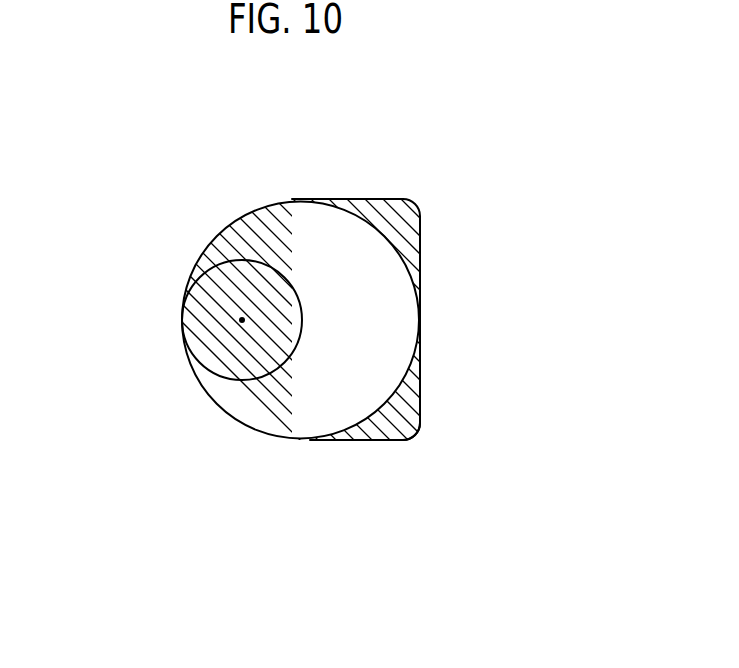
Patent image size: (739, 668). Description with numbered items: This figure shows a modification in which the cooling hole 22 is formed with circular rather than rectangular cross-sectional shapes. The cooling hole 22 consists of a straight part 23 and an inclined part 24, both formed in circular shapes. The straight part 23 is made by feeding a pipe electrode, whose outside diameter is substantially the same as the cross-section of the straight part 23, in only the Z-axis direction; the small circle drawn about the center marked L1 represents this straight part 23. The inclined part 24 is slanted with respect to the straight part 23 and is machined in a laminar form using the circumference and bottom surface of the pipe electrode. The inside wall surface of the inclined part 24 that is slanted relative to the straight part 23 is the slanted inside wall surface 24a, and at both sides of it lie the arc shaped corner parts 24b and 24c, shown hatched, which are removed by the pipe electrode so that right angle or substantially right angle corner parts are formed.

The cooling hole 22 is at (202, 133).
The straight part 23 is at (220, 280).
The inclined part 24 is at (300, 233).
The slanted inside wall surface 24a is at (419, 320).
The arc shaped corner part 24b is at (382, 230).
The arc shaped corner part 24c is at (397, 437).
The central axis L1 is at (242, 320).